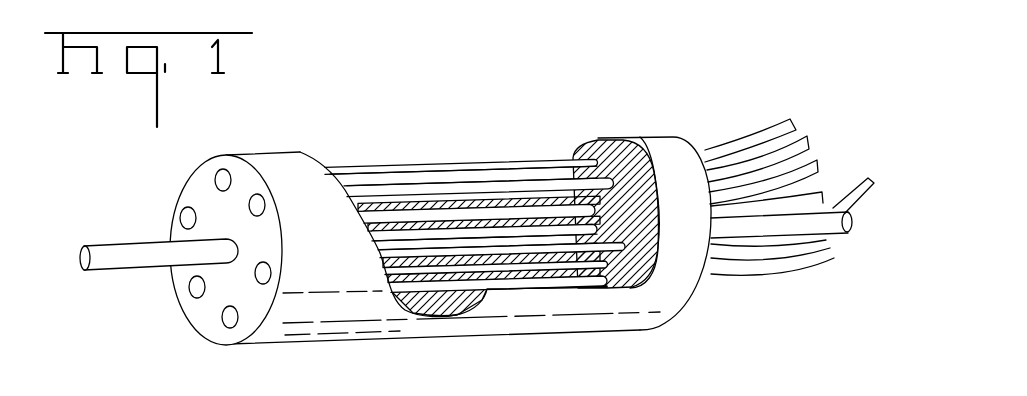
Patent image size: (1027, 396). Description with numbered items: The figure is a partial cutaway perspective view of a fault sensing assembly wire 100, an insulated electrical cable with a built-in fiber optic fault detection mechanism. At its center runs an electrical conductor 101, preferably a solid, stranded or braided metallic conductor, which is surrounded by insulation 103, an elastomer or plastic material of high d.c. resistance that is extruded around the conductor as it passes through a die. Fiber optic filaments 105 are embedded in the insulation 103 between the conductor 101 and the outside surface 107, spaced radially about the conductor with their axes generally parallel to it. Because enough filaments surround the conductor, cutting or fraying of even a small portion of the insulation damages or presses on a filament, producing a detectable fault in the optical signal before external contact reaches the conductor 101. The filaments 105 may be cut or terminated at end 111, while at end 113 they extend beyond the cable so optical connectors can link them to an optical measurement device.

The fault sensing assembly wire 100 is at (261, 142).
The electrical conductor 101 is at (148, 250).
The insulation 103 is at (607, 137).
The fiber optic filaments 105 is at (442, 162).
The outside surface 107 is at (647, 137).
The end 111 is at (180, 308).
The end 113 is at (700, 278).